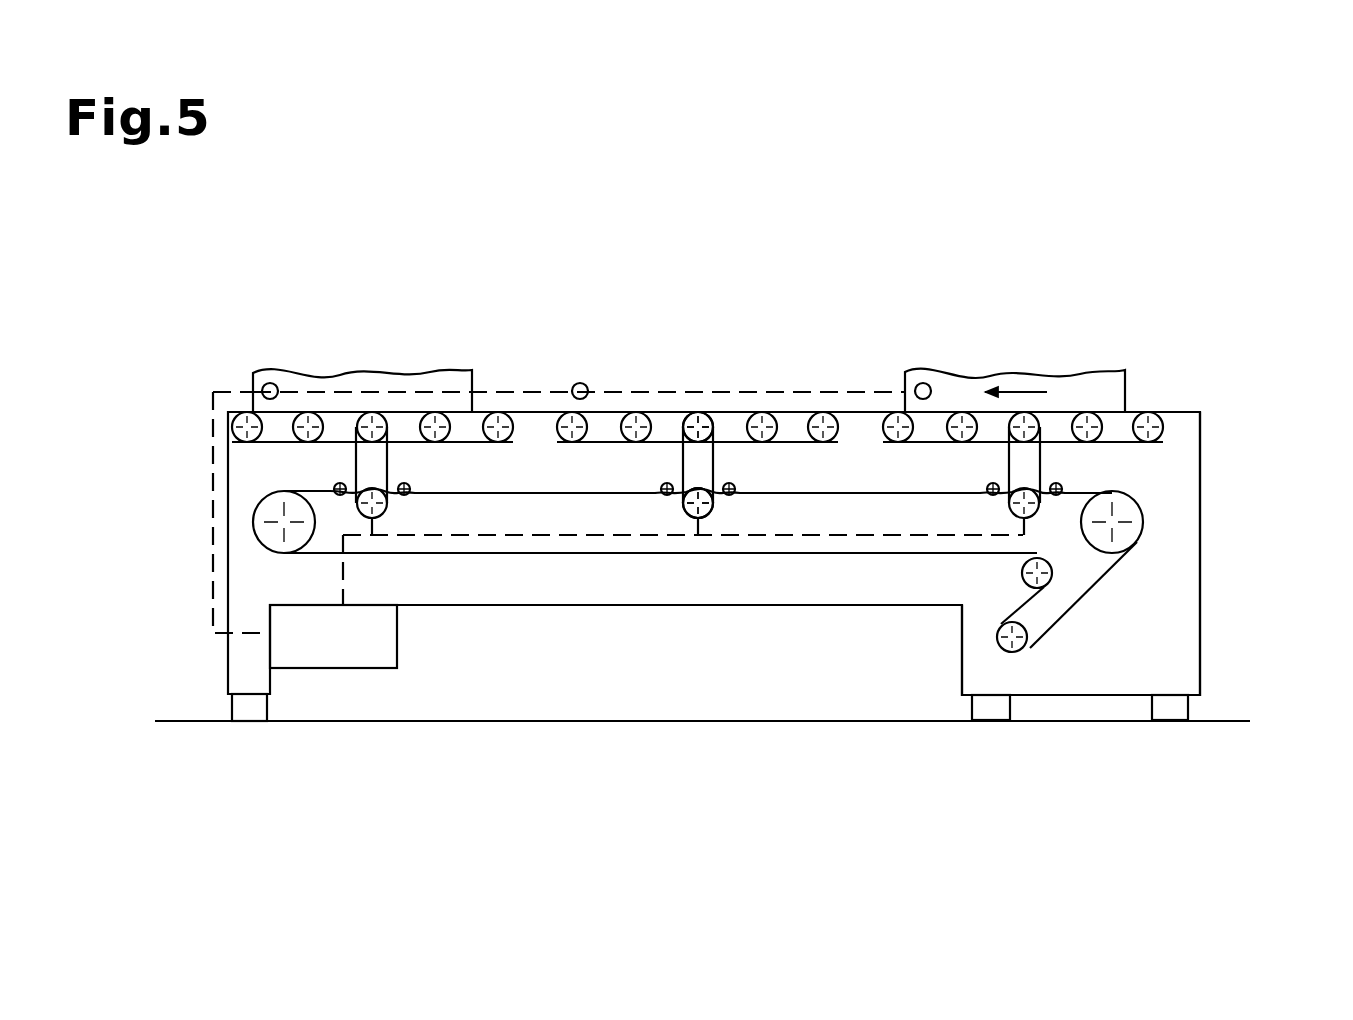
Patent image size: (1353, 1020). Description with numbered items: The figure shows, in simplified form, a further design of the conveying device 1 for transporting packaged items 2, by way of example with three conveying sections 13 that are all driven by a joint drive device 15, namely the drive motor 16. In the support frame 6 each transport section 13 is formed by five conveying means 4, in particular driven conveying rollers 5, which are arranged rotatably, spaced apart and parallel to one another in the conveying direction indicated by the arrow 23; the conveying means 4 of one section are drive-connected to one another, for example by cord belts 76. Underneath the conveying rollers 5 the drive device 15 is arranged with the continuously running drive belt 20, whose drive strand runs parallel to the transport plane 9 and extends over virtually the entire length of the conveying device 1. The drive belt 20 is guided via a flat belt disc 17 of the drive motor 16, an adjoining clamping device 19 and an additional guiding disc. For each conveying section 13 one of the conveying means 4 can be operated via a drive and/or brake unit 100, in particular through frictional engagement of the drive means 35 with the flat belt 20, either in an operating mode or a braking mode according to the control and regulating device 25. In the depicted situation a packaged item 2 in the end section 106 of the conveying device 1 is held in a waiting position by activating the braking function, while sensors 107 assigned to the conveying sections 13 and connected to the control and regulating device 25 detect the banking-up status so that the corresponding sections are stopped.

The conveying device 1 is at (1225, 250).
The packaged item 2 is at (393, 385).
The conveying means 4 is at (648, 393).
The conveying roller 5 is at (707, 412).
The support frame 6 is at (1183, 453).
The transport plane 9 is at (605, 410).
The conveying section 13 is at (360, 285).
The drive device 15 is at (1168, 497).
The drive motor 16 is at (1182, 518).
The flat belt disc 17 is at (1128, 530).
The clamping device 19 is at (1120, 627).
The drive belt 20 is at (506, 497).
The arrow 23 is at (1018, 388).
The control and regulating device 25 is at (338, 650).
The drive means 35 is at (713, 510).
The cord belt 76 is at (800, 412).
The drive and/or brake unit 100 is at (682, 527).
The end section 106 is at (245, 372).
The sensor 107 is at (580, 383).